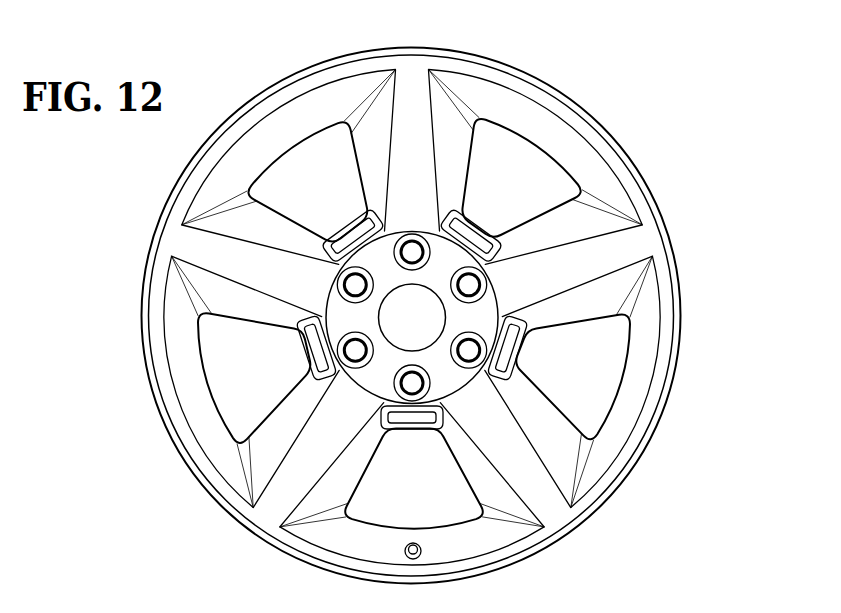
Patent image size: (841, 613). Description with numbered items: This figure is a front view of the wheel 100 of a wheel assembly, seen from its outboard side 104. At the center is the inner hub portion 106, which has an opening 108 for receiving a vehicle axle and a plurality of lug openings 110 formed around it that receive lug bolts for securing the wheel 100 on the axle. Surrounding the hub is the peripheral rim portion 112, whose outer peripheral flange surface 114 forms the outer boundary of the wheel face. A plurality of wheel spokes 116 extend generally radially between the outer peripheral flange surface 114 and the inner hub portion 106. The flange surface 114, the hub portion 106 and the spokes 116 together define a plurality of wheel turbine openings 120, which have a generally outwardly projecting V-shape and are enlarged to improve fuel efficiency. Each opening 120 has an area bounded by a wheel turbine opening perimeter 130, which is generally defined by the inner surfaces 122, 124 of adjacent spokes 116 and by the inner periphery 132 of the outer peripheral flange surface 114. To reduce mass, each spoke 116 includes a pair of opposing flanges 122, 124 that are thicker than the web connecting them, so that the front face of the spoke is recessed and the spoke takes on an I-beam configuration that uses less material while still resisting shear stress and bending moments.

The wheel 100 is at (526, 69).
The outboard side 104 is at (648, 240).
The inner hub portion 106 is at (484, 306).
The opening 108 is at (444, 316).
The lug openings 110 is at (428, 385).
The peripheral rim portion 112 is at (604, 511).
The outer peripheral flange surface 114 is at (540, 538).
The wheel spokes 116 is at (413, 80).
The wheel turbine openings 120 is at (341, 192).
The flange 122 is at (262, 433).
The flange 124 is at (355, 468).
The wheel turbine opening perimeter 130 is at (470, 147).
The inner periphery 132 is at (560, 158).